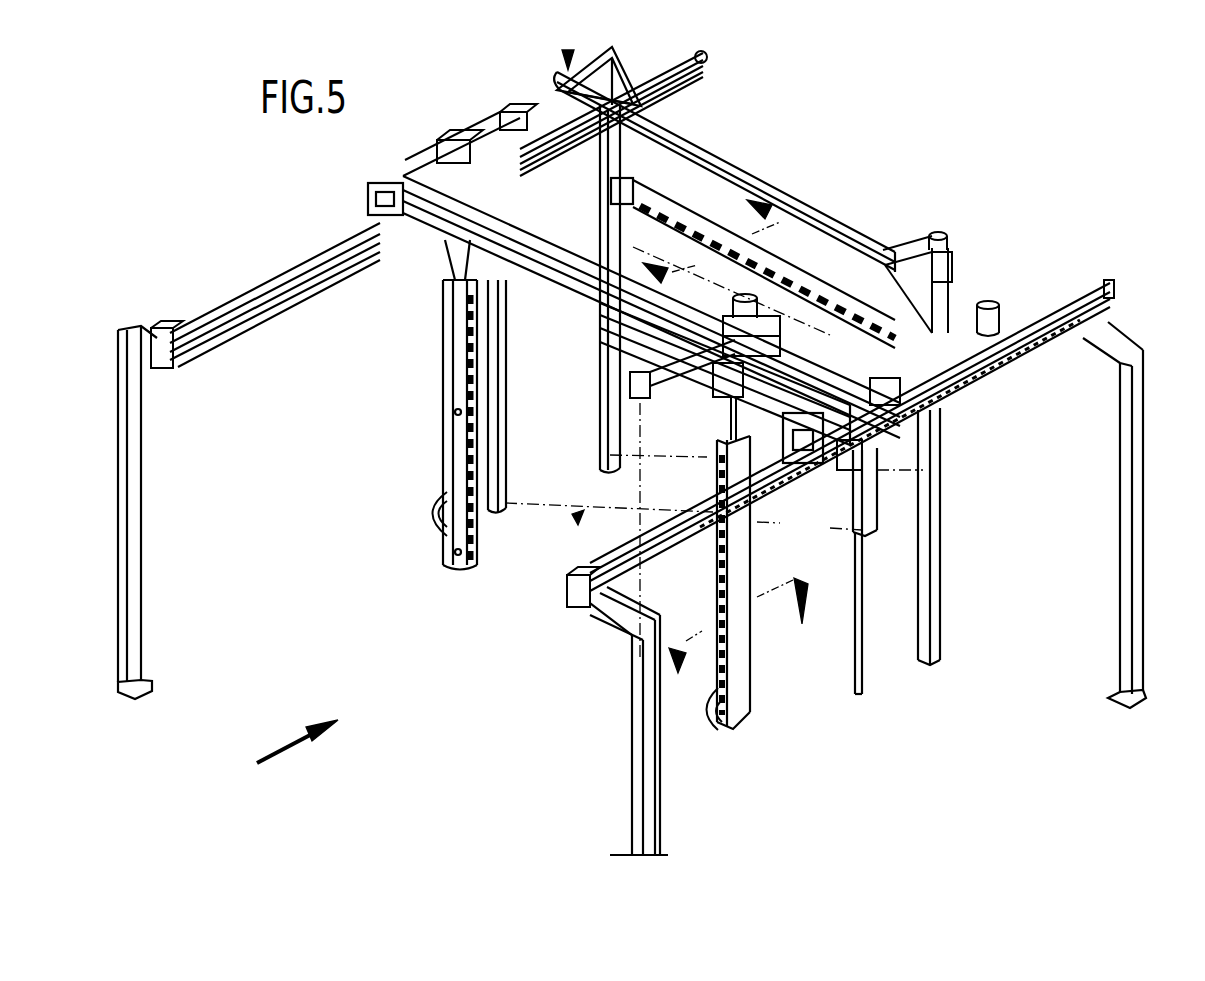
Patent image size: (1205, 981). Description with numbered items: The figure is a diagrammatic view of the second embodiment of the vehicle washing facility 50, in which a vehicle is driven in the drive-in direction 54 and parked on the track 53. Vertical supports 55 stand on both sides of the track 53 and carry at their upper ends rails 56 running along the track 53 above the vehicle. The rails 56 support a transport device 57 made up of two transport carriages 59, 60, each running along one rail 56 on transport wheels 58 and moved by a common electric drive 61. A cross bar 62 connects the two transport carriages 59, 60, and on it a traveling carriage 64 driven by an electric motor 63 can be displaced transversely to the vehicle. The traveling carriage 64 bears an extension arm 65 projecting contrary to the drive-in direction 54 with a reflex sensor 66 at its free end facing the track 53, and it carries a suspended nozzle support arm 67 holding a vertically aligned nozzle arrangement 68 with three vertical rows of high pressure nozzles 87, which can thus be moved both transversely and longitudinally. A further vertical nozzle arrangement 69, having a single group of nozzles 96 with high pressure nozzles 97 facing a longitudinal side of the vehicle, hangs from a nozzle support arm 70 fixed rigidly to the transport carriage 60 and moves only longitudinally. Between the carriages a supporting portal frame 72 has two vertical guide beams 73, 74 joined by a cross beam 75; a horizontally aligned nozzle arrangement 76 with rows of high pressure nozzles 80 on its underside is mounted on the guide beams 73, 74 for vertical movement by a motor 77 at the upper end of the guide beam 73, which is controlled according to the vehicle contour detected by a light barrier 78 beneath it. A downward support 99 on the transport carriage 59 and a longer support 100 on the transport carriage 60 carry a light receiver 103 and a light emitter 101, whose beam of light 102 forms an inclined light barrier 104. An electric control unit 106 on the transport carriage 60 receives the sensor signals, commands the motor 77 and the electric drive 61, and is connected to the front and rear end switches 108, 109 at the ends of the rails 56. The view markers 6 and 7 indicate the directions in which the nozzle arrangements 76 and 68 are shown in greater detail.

The section line 6- 6 is at (716, 251).
The section line 7- 7 is at (740, 613).
The vehicle washing facility 50 is at (848, 146).
The track 53 is at (384, 658).
The drive-in direction 54 is at (290, 755).
The vertical supports 55 is at (126, 487).
The rails 56 is at (702, 74).
The transport device 57 is at (560, 52).
The transport wheels 58 is at (847, 471).
The transport carriage 59 is at (972, 330).
The transport carriage 60 is at (546, 90).
The electric drive 61 is at (1001, 314).
The cross bar 62 is at (445, 146).
The electric motor 63 is at (782, 318).
The traveling carriage 64 is at (758, 298).
The extension arm 65 is at (652, 378).
The reflex sensor 66 is at (656, 398).
The nozzle support arm 67 is at (731, 422).
The nozzle arrangement 68 is at (775, 637).
The nozzle arrangement 69 is at (434, 455).
The nozzle support arm 70 is at (452, 278).
The supporting portal frame 72 is at (722, 137).
The guide beam 73 is at (942, 508).
The guide beam 74 is at (622, 152).
The cross beam 75 is at (752, 170).
The nozzle arrangement 76 is at (847, 292).
The motor 77 is at (952, 280).
The light barrier 78 is at (600, 228).
The high pressure nozzles 80 is at (701, 220).
The high pressure nozzles 87 is at (718, 724).
The group of nozzles 96 is at (455, 430).
The high pressure nozzles 97 is at (445, 512).
The support 99 is at (880, 513).
The support 100 is at (502, 378).
The light emitter 101 is at (505, 510).
The beam of light 102 is at (635, 508).
The light receiver 103 is at (862, 568).
The light barrier 104 is at (560, 529).
The electric control unit 106 is at (504, 116).
The front end switch 108 is at (705, 57).
The rear end switch 109 is at (162, 328).